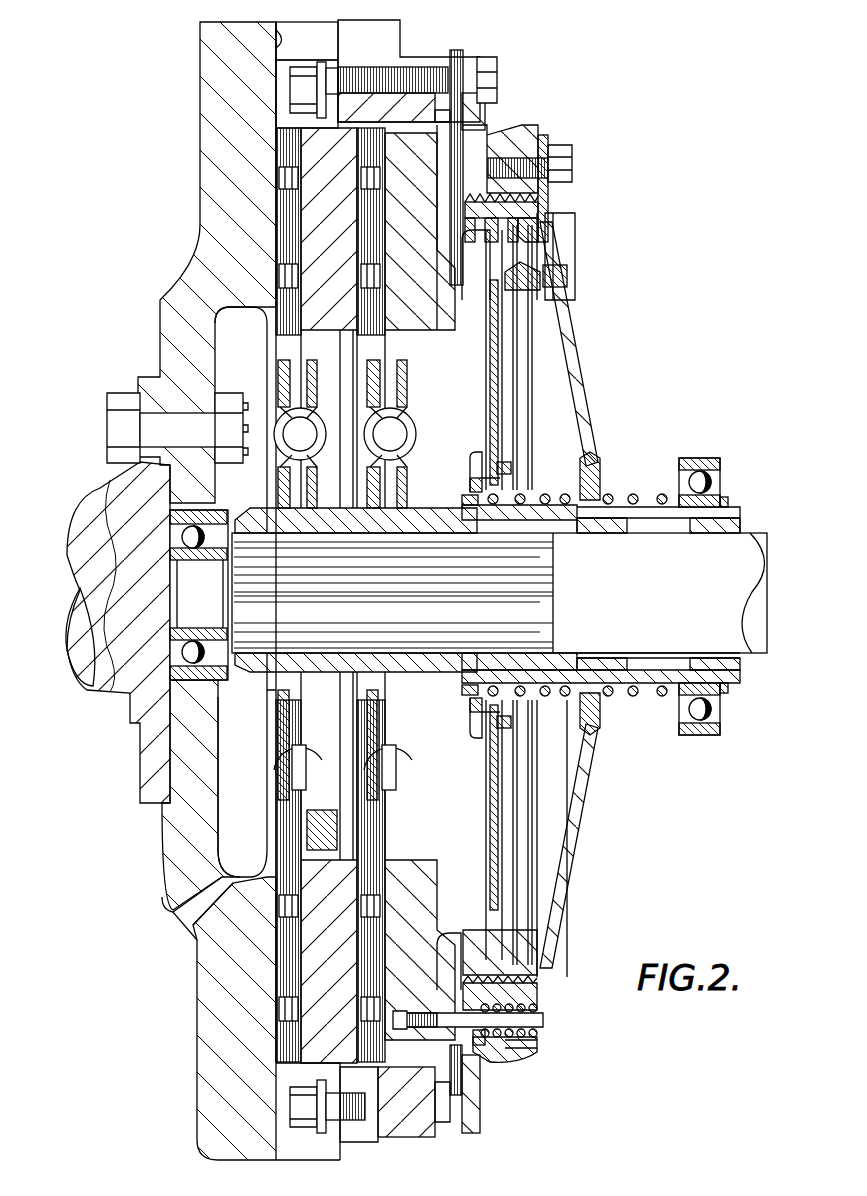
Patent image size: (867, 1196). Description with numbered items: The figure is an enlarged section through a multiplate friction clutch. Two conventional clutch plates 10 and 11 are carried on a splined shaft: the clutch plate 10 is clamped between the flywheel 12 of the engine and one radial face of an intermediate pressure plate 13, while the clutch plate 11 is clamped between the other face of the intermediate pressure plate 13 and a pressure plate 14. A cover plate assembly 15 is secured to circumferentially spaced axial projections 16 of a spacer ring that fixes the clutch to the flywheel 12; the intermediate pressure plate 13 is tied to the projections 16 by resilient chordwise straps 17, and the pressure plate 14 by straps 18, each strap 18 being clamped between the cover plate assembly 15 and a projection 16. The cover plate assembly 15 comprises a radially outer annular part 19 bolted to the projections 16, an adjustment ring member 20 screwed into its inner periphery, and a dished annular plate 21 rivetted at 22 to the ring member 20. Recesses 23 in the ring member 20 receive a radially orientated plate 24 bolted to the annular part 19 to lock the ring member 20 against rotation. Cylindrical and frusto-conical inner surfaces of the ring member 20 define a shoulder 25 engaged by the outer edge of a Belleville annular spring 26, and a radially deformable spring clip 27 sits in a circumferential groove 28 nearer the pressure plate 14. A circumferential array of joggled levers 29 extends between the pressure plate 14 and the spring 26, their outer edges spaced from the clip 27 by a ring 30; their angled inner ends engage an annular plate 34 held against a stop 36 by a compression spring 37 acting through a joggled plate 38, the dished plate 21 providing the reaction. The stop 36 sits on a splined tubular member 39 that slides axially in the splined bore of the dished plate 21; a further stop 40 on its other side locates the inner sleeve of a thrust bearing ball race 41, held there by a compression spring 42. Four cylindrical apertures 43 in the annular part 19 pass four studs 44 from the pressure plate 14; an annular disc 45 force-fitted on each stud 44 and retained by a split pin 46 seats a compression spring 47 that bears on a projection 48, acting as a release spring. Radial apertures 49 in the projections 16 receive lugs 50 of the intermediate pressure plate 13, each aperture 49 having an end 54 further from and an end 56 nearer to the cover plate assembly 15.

The clutch plate 10 is at (293, 223).
The clutch plate 11 is at (363, 253).
The flywheel 12 is at (240, 130).
The intermediate pressure plate 13 is at (333, 202).
The pressure plate 14 is at (400, 230).
The cover plate assembly 15 is at (548, 110).
The axial projections 16 is at (480, 80).
The straps 17 is at (313, 80).
The straps 18 is at (458, 150).
The radially outer annular part 19 is at (513, 142).
The adjustment ring member 20 is at (540, 240).
The dished annular plate 21 is at (575, 408).
The rivet 22 is at (548, 278).
The recesses 23 is at (560, 228).
The radially orientated plate 24 is at (548, 146).
The shoulder 25 is at (545, 228).
The annular spring 26 is at (515, 280).
The spring clip 27 is at (490, 217).
The circumferential groove 28 is at (483, 200).
The levers 29 is at (498, 395).
The ring 30 is at (493, 227).
The annular plate 34 is at (490, 467).
The stop 36 is at (473, 506).
The compression spring 37 is at (547, 494).
The joggled plate 38 is at (497, 467).
The splined tubular member 39 is at (507, 513).
The stop 40 is at (727, 690).
The thrust bearing ball race 41 is at (700, 725).
The compression spring 42 is at (650, 690).
The cylindrical apertures 43 is at (510, 1040).
The studs 44 is at (523, 1037).
The annular disc 45 is at (535, 1030).
The split pin 46 is at (545, 1020).
The compression spring 47 is at (520, 1000).
The projection 48 is at (478, 1037).
The radial apertures 49 is at (300, 45).
The lugs 50 is at (340, 1132).
The end of the aperture 54 is at (277, 42).
The end of the aperture 56 is at (380, 58).